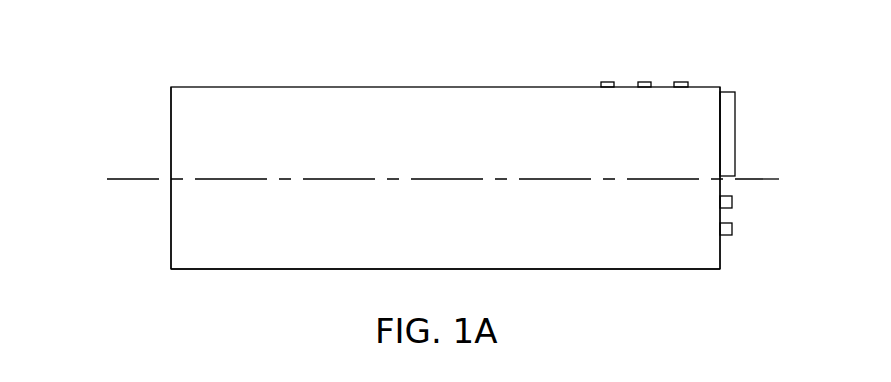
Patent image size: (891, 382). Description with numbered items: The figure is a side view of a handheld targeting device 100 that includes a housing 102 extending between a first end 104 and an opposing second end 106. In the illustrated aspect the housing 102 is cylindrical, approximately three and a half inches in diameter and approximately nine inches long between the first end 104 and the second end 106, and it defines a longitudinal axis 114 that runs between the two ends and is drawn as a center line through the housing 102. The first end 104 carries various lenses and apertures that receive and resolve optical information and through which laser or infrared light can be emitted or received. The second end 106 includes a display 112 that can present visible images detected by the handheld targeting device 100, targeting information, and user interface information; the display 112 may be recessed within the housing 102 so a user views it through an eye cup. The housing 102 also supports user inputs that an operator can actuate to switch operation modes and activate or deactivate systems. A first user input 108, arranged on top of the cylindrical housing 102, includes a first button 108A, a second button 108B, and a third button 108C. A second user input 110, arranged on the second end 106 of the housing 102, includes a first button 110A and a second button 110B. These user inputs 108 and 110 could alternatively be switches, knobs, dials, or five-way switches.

The handheld targeting device 100 is at (583, 274).
The housing 102 is at (535, 261).
The first end 104 is at (171, 267).
The second end 106 is at (722, 260).
The first user input 108 is at (678, 58).
The first button 108A is at (607, 82).
The second button 108B is at (641, 82).
The third button 108C is at (700, 77).
The second user input 110 is at (787, 219).
The first button 110A is at (733, 201).
The second button 110B is at (737, 213).
The display 112 is at (731, 121).
The longitudinal axis 114 is at (127, 178).